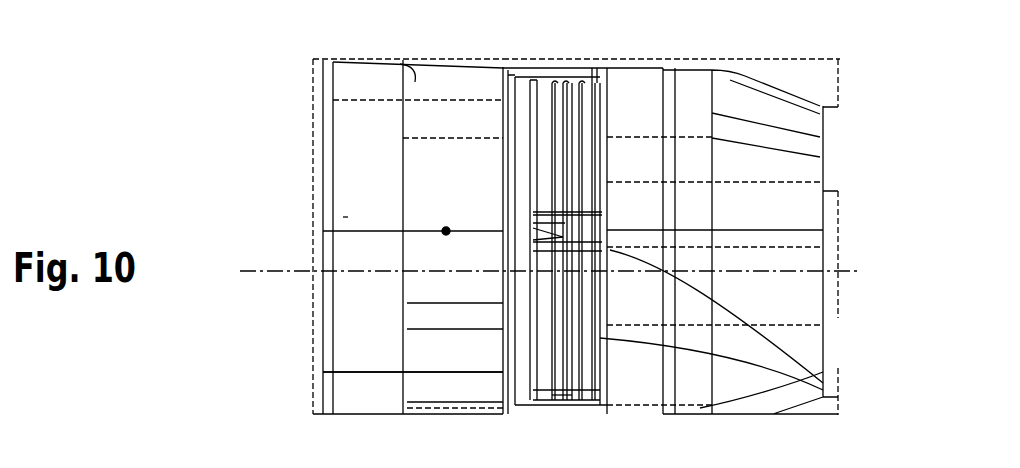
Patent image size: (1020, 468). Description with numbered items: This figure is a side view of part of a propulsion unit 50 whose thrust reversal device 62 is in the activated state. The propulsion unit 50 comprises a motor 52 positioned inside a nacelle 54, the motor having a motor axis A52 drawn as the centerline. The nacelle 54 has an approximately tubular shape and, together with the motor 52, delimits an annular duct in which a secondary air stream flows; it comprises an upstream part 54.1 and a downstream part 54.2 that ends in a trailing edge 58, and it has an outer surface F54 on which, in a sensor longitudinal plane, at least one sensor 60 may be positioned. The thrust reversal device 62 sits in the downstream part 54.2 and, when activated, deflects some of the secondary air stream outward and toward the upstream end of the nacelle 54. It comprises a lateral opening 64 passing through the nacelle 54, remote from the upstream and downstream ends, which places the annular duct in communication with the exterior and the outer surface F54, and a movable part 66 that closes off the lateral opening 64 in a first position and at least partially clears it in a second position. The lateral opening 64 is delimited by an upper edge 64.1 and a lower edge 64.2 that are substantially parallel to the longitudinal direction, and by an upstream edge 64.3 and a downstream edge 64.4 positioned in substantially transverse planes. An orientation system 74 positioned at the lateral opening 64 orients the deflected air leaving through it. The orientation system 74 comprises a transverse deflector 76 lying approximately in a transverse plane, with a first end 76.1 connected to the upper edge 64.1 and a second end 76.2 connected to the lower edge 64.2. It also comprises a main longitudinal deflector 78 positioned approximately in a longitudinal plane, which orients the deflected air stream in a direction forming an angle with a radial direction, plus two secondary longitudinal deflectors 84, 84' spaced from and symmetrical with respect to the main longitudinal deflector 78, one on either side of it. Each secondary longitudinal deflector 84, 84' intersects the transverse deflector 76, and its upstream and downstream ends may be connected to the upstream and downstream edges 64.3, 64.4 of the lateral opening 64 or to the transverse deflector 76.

The propulsion unit 50 is at (300, 110).
The motor 52 is at (840, 322).
The nacelle 54 is at (416, 90).
The upstream part 54.1 is at (392, 57).
The downstream part 54.2 is at (722, 100).
The trailing edge 58 is at (826, 118).
The sensor 60 is at (445, 237).
The thrust reversal device 62 is at (541, 88).
The lateral opening 64 is at (503, 66).
The upper edge 64.1 is at (583, 80).
The lower edge 64.2 is at (543, 407).
The upstream edge 64.3 is at (510, 347).
The downstream edge 64.4 is at (823, 388).
The movable part 66 is at (690, 97).
The orientation system 74 is at (607, 177).
The transverse deflector 76 is at (573, 153).
The first end 76.1 is at (563, 81).
The second end 76.2 is at (588, 405).
The main longitudinal deflector 78 is at (610, 237).
The secondary longitudinal deflector 84 is at (745, 320).
The secondary longitudinal deflector 84' is at (755, 188).
The motor axis A52 is at (283, 270).
The outer surface F54 is at (343, 217).